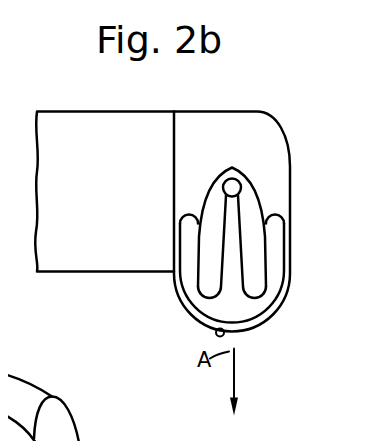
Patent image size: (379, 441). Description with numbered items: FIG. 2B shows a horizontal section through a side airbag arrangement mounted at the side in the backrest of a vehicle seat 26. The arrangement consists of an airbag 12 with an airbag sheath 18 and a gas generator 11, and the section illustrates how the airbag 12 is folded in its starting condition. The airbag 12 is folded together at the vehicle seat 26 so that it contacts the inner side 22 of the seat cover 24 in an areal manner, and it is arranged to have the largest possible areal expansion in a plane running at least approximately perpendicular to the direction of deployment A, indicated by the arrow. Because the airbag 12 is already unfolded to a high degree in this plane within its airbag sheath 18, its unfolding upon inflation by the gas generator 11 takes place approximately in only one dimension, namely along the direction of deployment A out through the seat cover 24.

The gas generator 11 is at (232, 184).
The airbag 12 is at (272, 210).
The airbag sheath 18 is at (282, 273).
The inner side of the seat cover 22 is at (214, 331).
The seat cover 24 is at (248, 332).
The vehicle seat 26 is at (110, 253).